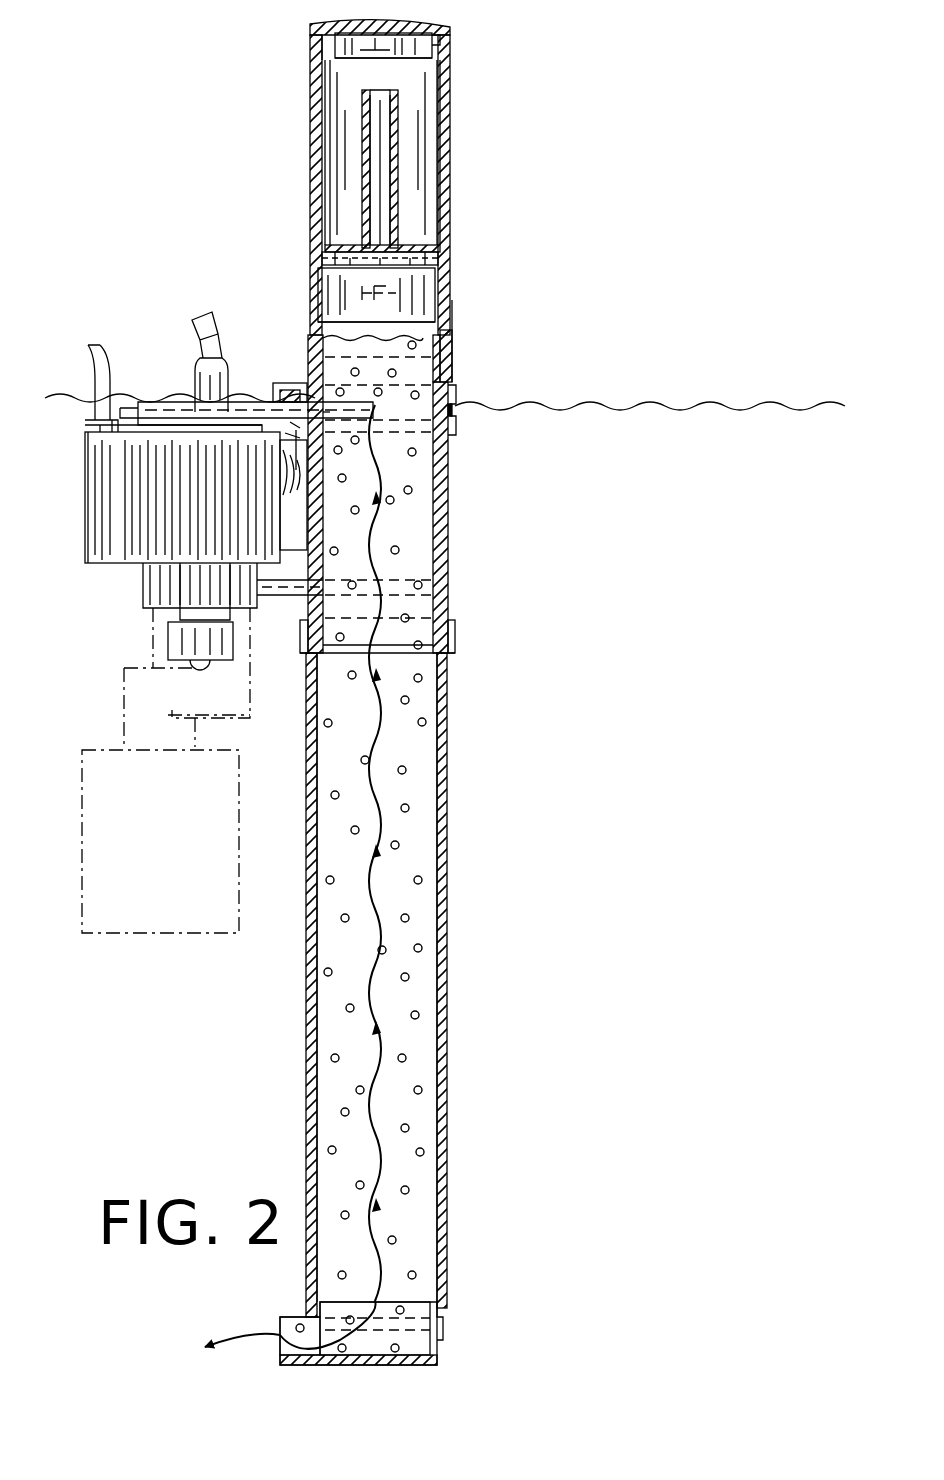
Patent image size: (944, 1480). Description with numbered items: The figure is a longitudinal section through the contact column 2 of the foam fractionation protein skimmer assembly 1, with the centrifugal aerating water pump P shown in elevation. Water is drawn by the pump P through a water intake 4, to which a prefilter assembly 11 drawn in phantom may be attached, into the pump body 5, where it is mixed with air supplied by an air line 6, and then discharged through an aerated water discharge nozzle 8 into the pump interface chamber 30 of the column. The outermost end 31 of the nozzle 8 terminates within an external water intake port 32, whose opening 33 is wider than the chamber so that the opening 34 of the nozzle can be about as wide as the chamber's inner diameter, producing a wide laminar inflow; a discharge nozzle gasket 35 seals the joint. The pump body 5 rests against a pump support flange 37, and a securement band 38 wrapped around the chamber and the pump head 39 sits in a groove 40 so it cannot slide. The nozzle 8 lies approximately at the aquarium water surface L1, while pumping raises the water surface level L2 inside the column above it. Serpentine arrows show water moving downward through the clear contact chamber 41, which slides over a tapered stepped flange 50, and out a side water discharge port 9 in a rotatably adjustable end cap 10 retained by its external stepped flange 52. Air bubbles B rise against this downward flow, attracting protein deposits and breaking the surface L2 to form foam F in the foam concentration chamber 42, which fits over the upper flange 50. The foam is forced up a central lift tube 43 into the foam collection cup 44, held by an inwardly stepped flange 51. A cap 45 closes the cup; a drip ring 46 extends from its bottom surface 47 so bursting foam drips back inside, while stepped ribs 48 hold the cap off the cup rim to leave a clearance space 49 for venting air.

The foam fractionation protein skimmer assembly 1 is at (460, 310).
The contact column 2 is at (460, 490).
The water intake 4 is at (185, 640).
The pump body 5 is at (150, 575).
The air line 6 is at (210, 330).
The aerated water discharge nozzle 8 is at (272, 397).
The side water discharge port 9 is at (293, 1318).
The end cap 10 is at (445, 1335).
The prefilter assembly 11 is at (122, 908).
The pump interface chamber 30 is at (450, 525).
The outermost end 31 is at (303, 395).
The external water intake port 32 is at (285, 433).
The opening 33 is at (290, 422).
The opening 34 is at (326, 415).
The discharge nozzle gasket 35 is at (300, 440).
The pump support flange 37 is at (296, 592).
The securement band 38 is at (452, 408).
The pump head 39 is at (174, 375).
The groove 40 is at (455, 420).
The contact chamber 41 is at (445, 890).
The foam concentration chamber 42 is at (452, 316).
The central lift tube 43 is at (392, 143).
The foam collection cup 44 is at (318, 128).
The cap 45 is at (398, 32).
The drip ring 46 is at (440, 50).
The bottom surface 47 is at (372, 28).
The stepped ribs 48 is at (318, 42).
The clearance space 49 is at (441, 38).
The external stepped flanges 50 is at (455, 345).
The inwardly stepped flange 51 is at (448, 262).
The external stepped flange 52 is at (440, 1310).
The air bubbles B is at (425, 720).
The foam F is at (376, 295).
The aquarium water surface L1 is at (655, 380).
The water surface level within contact column L2 is at (420, 345).
The centrifugal aerating water pump P is at (112, 540).